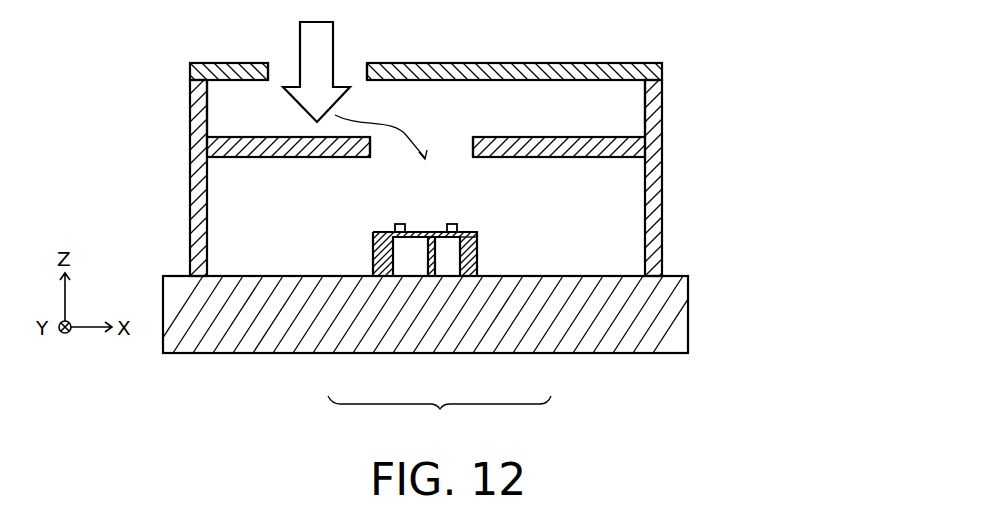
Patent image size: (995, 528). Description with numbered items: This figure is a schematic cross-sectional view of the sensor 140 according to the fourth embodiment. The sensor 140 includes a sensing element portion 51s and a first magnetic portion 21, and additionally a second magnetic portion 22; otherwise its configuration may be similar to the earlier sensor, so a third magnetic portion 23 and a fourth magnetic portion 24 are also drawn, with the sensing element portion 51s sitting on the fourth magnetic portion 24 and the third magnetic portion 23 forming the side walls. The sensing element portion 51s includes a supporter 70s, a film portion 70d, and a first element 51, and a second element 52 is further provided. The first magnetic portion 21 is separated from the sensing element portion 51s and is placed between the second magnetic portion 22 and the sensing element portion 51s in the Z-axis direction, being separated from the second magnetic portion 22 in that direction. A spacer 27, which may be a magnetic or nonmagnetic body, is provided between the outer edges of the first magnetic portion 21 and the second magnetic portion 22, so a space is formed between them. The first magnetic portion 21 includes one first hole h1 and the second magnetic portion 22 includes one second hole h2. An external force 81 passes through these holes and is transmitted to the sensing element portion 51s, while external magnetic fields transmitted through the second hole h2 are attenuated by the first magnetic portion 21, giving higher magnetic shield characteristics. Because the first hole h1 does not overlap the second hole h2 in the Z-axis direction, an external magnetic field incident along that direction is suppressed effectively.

The sensor 140 is at (797, 75).
The external force 81 is at (298, 56).
The second hole h2 is at (350, 67).
The first hole h1 is at (463, 144).
The second magnetic portion 22 is at (566, 70).
The spacer 27 is at (662, 97).
The first magnetic portion 21 is at (622, 130).
The third magnetic portion 23 is at (662, 215).
The fourth magnetic portion 24 is at (652, 317).
The second element 52 is at (398, 240).
The film portion 70d is at (431, 238).
The first element 51 is at (450, 236).
The supporter 70s is at (468, 258).
The sensing element portion 51s is at (439, 420).